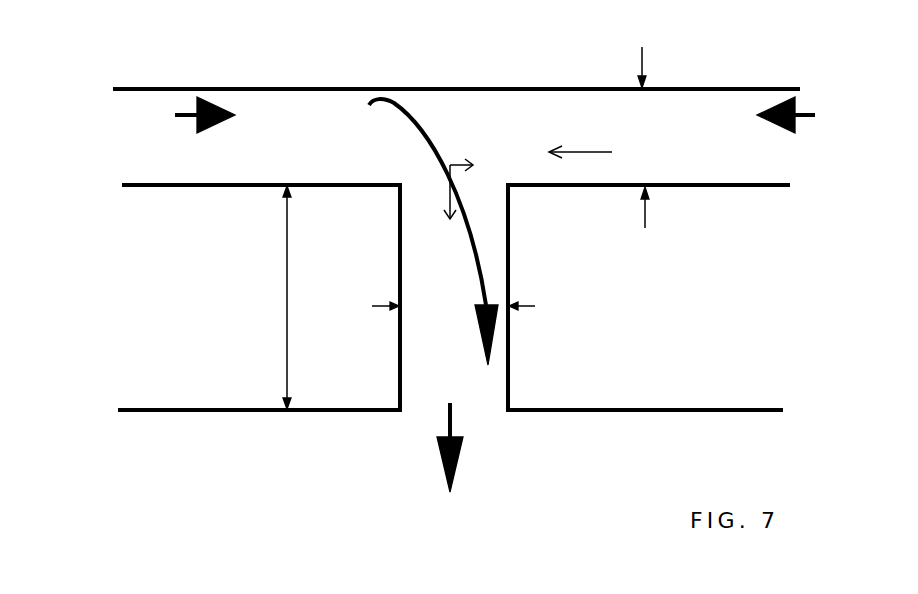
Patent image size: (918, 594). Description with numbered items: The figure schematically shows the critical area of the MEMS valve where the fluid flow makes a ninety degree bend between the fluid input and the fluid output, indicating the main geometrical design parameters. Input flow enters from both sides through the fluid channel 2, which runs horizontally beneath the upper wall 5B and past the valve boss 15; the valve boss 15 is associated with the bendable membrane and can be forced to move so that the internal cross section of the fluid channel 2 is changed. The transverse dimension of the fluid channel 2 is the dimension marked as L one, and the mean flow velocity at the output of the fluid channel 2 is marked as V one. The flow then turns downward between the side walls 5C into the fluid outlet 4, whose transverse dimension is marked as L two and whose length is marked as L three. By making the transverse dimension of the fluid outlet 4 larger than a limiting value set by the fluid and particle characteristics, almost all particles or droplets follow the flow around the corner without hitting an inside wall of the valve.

The upper channel wall 5B is at (456, 65).
The valve boss 15 is at (493, 206).
The side channel walls 5C is at (451, 297).
The fluid channel 2 is at (702, 163).
The fluid outlet 4 is at (544, 436).